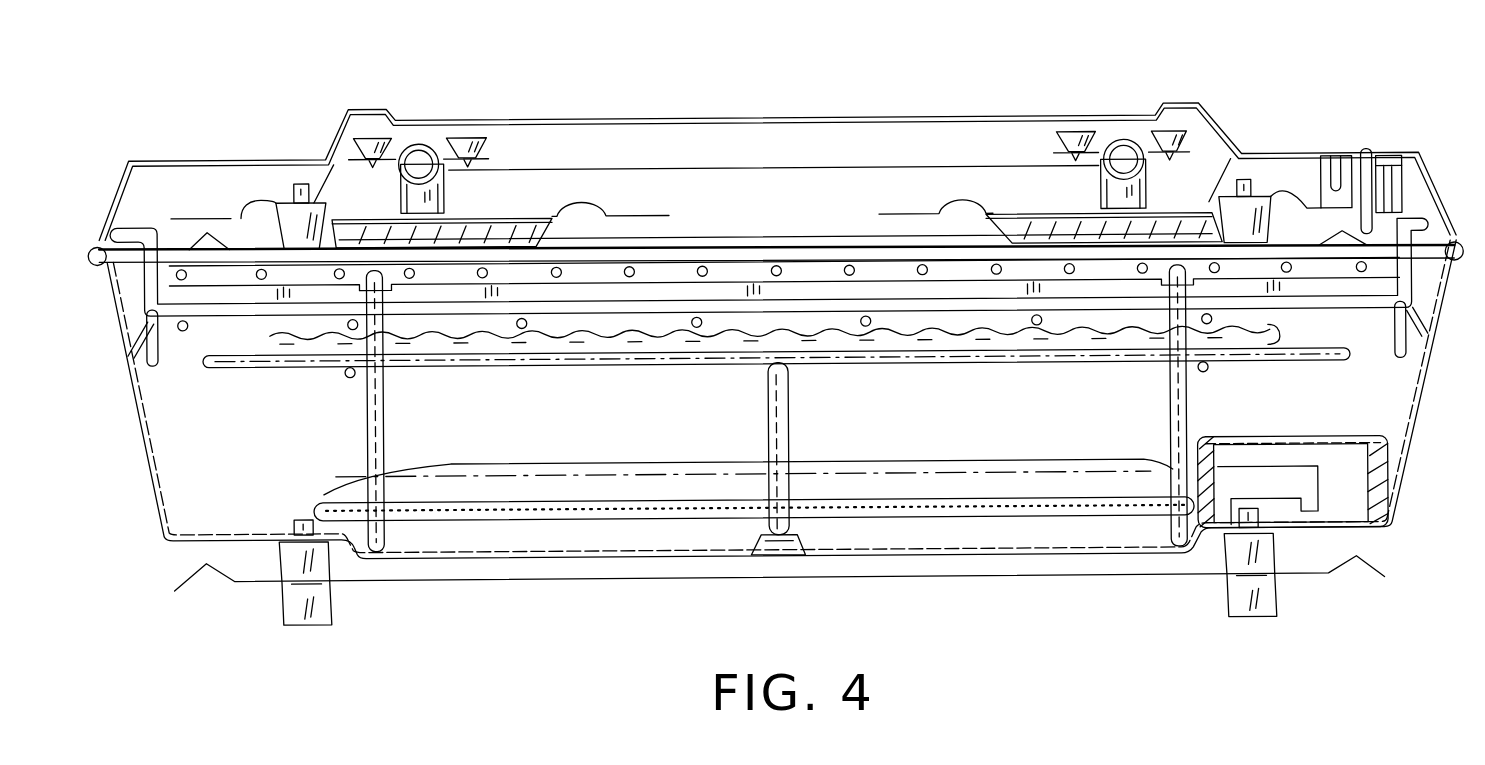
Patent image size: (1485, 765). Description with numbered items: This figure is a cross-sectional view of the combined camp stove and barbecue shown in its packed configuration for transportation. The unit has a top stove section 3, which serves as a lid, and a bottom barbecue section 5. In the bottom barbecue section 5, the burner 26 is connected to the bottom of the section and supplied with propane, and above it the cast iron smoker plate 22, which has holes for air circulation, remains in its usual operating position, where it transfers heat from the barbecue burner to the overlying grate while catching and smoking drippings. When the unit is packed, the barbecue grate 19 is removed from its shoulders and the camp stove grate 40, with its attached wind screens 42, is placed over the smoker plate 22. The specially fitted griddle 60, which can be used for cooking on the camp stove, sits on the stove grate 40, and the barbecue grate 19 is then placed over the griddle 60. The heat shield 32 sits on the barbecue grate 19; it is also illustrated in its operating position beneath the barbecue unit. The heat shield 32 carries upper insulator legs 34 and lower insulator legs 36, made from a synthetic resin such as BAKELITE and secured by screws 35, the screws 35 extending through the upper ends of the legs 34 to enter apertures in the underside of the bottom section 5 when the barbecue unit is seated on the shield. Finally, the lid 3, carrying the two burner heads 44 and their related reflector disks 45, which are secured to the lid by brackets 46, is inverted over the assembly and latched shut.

The top stove section 3 is at (905, 112).
The bottom barbecue section 5 is at (140, 458).
The grate 19 is at (146, 329).
The cast iron smoker plate 22 is at (715, 370).
The burner 26 is at (625, 460).
The heat shield 32 is at (240, 246).
The upper insulator legs 34 is at (288, 200).
The screws 35 is at (302, 181).
The lower insulator legs 36 is at (280, 603).
The grate 40 is at (965, 312).
The wind screens 42 is at (1372, 392).
The burner heads 44 is at (500, 217).
The reflector disks 45 is at (652, 212).
The brackets 46 is at (490, 150).
The griddle 60 is at (1103, 284).